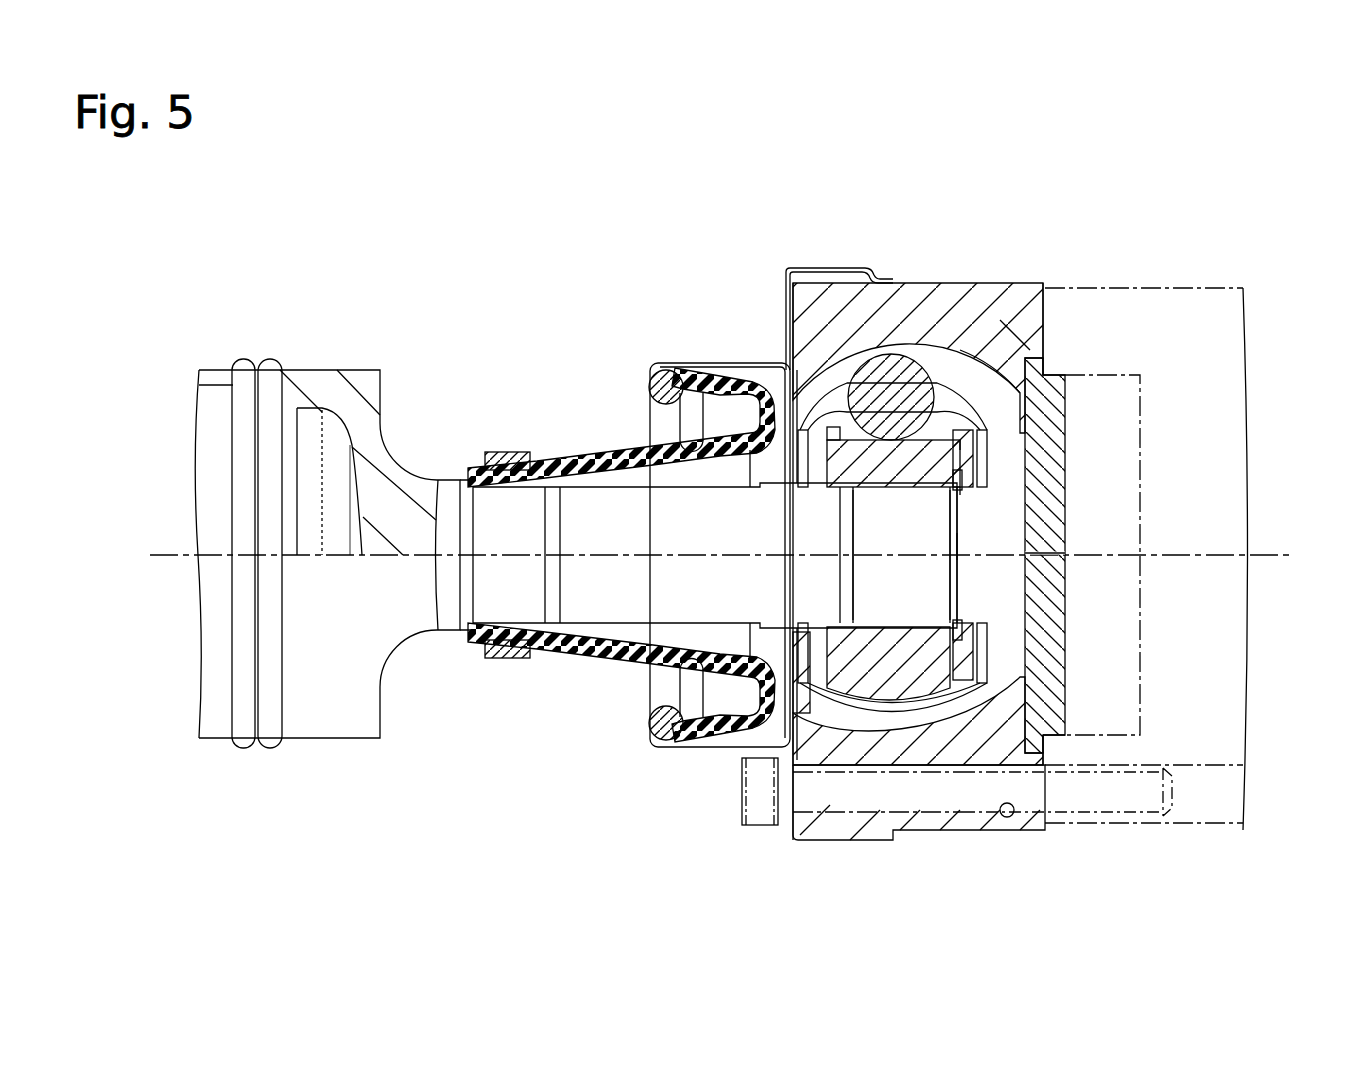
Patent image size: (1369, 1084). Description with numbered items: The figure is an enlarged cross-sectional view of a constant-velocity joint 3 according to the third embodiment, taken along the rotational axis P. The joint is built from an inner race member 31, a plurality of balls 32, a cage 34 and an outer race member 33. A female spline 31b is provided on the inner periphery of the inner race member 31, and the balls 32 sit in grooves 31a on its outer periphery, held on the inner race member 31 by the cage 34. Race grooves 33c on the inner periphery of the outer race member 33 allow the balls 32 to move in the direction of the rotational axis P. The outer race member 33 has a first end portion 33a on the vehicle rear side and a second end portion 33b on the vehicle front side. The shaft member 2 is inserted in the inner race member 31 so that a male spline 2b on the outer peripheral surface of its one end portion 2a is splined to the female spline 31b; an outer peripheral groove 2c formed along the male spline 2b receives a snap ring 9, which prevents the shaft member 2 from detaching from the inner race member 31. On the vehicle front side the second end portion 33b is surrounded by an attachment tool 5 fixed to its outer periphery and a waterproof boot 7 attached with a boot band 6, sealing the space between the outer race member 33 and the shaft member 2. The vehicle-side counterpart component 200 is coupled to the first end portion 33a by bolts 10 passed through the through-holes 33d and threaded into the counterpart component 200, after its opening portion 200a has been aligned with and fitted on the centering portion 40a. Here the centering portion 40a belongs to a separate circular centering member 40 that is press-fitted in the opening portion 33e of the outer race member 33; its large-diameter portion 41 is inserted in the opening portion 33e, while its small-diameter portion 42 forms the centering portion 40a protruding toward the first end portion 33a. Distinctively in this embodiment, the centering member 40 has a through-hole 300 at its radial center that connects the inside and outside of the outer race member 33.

The shaft member 2 is at (314, 356).
The one end portion 2a is at (892, 632).
The male spline 2b is at (873, 605).
The outer peripheral groove 2c is at (957, 533).
The constant-velocity joint 3 is at (1031, 525).
The attachment tool 5 is at (680, 362).
The boot band 6 is at (503, 455).
The waterproof boot 7 is at (583, 455).
The snap ring 9 is at (960, 640).
The bolts 10 is at (767, 828).
The inner race member 31 is at (923, 695).
The grooves 31a is at (937, 442).
The female spline 31b is at (1000, 488).
The balls 32 is at (880, 372).
The outer race member 33 is at (920, 292).
The first end portion 33a is at (1040, 290).
The second end portion 33b is at (800, 277).
The race grooves 33c is at (978, 372).
The through-holes 33d is at (1007, 818).
The opening portion 33e is at (1047, 747).
The cage 34 is at (805, 400).
The centering member 40 is at (1045, 423).
The centering portion 40a is at (1055, 368).
The small-diameter portion 42 is at (1054, 744).
The large-diameter portion 41 is at (1010, 345).
The vehicle-side counterpart component 200 is at (1200, 295).
The opening portion 200a is at (1112, 735).
The through-hole 300 is at (1040, 560).
The rotational axis P is at (732, 555).